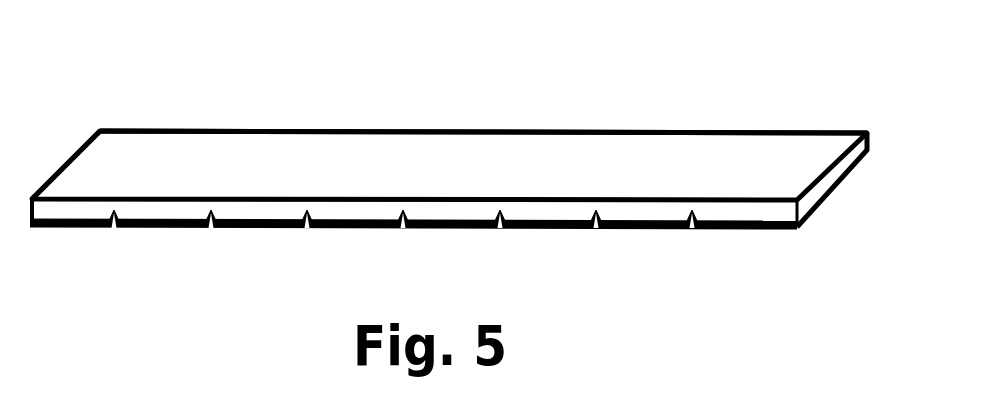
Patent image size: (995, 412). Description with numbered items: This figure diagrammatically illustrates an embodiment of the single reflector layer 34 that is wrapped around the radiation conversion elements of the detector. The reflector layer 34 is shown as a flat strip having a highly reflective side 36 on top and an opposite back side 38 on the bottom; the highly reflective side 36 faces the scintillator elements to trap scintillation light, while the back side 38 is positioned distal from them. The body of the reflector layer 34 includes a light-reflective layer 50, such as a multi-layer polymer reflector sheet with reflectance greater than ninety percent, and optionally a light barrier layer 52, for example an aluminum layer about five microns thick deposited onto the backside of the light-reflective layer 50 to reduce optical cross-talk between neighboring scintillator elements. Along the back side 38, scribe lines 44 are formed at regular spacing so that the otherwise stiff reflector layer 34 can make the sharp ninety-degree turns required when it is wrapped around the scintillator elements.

The reflector layer 34 is at (448, 167).
The highly reflective side 36 is at (170, 146).
The back side 38 is at (168, 235).
The scribe lines 44 is at (355, 257).
The light-reflective layer 50 is at (643, 150).
The light barrier layer 52 is at (632, 230).